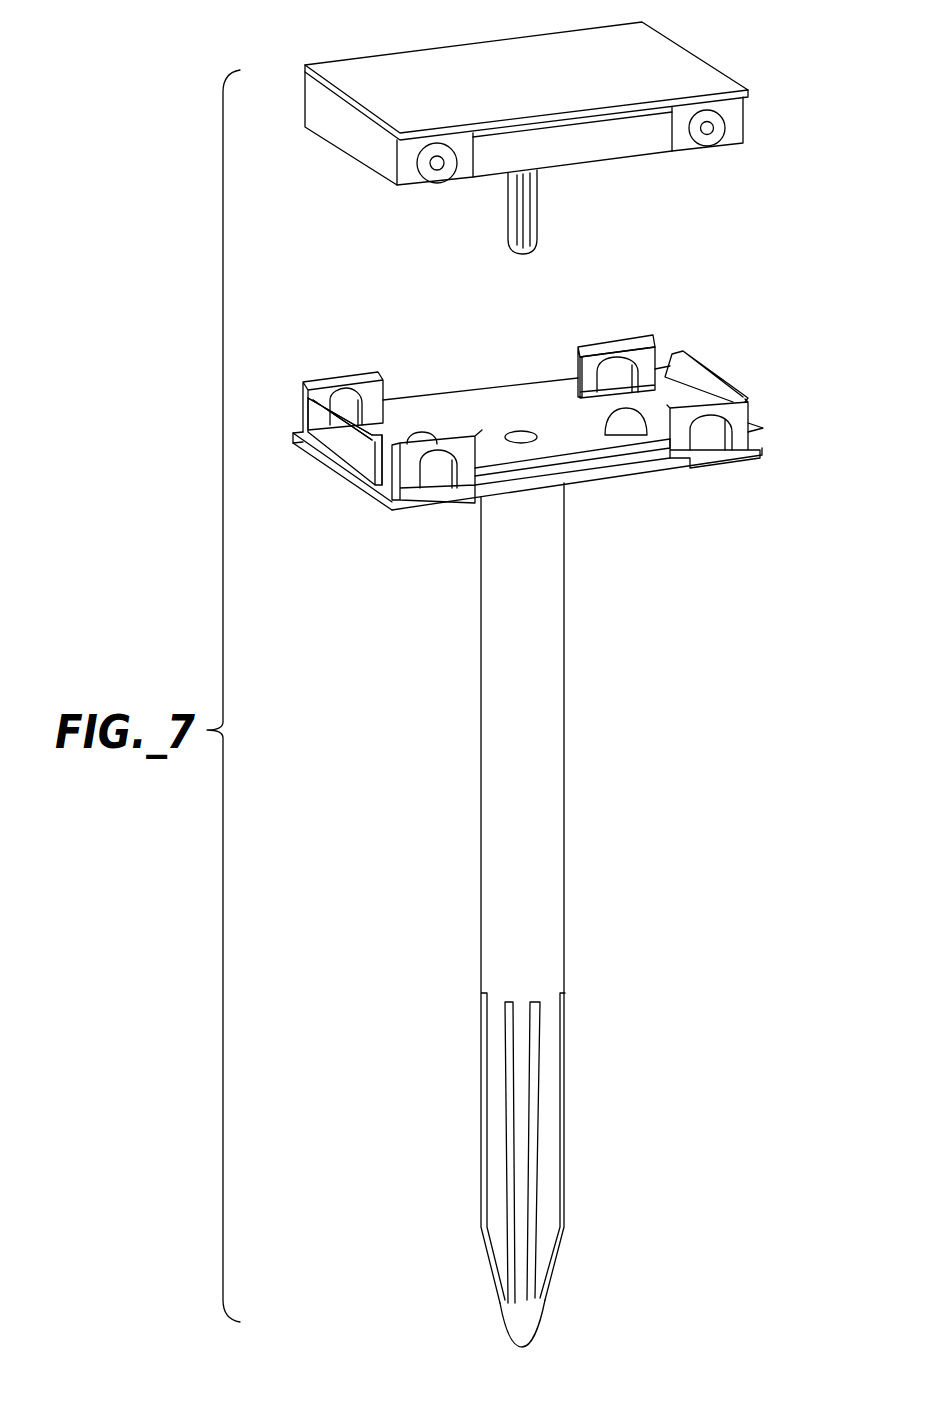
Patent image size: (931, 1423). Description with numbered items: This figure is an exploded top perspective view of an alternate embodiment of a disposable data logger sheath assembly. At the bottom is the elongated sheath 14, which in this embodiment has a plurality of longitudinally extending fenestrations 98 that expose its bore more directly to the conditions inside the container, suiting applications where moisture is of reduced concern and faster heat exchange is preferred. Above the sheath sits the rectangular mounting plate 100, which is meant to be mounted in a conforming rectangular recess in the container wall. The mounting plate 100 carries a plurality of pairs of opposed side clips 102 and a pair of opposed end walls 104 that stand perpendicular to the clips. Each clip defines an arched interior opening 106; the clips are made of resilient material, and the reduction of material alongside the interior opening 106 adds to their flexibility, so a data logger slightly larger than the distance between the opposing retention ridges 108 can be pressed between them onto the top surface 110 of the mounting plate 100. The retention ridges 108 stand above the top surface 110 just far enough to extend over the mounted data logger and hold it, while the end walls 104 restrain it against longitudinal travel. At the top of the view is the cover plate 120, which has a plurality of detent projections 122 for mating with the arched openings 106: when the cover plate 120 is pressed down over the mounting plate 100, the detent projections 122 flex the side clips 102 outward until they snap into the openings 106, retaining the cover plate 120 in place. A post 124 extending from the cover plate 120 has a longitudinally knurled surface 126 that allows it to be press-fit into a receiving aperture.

The sheath 14 is at (566, 690).
The fenestrations 98 is at (560, 1073).
The mounting plate 100 is at (607, 483).
The side clips 102 is at (348, 373).
The end walls 104 is at (337, 443).
The arched interior opening 106 is at (420, 483).
The retention ridges 108 is at (382, 372).
The top surface 110 is at (580, 426).
The cover plate 120 is at (667, 33).
The detent projections 122 is at (414, 182).
The post 124 is at (507, 232).
The knurled surface 126 is at (528, 235).